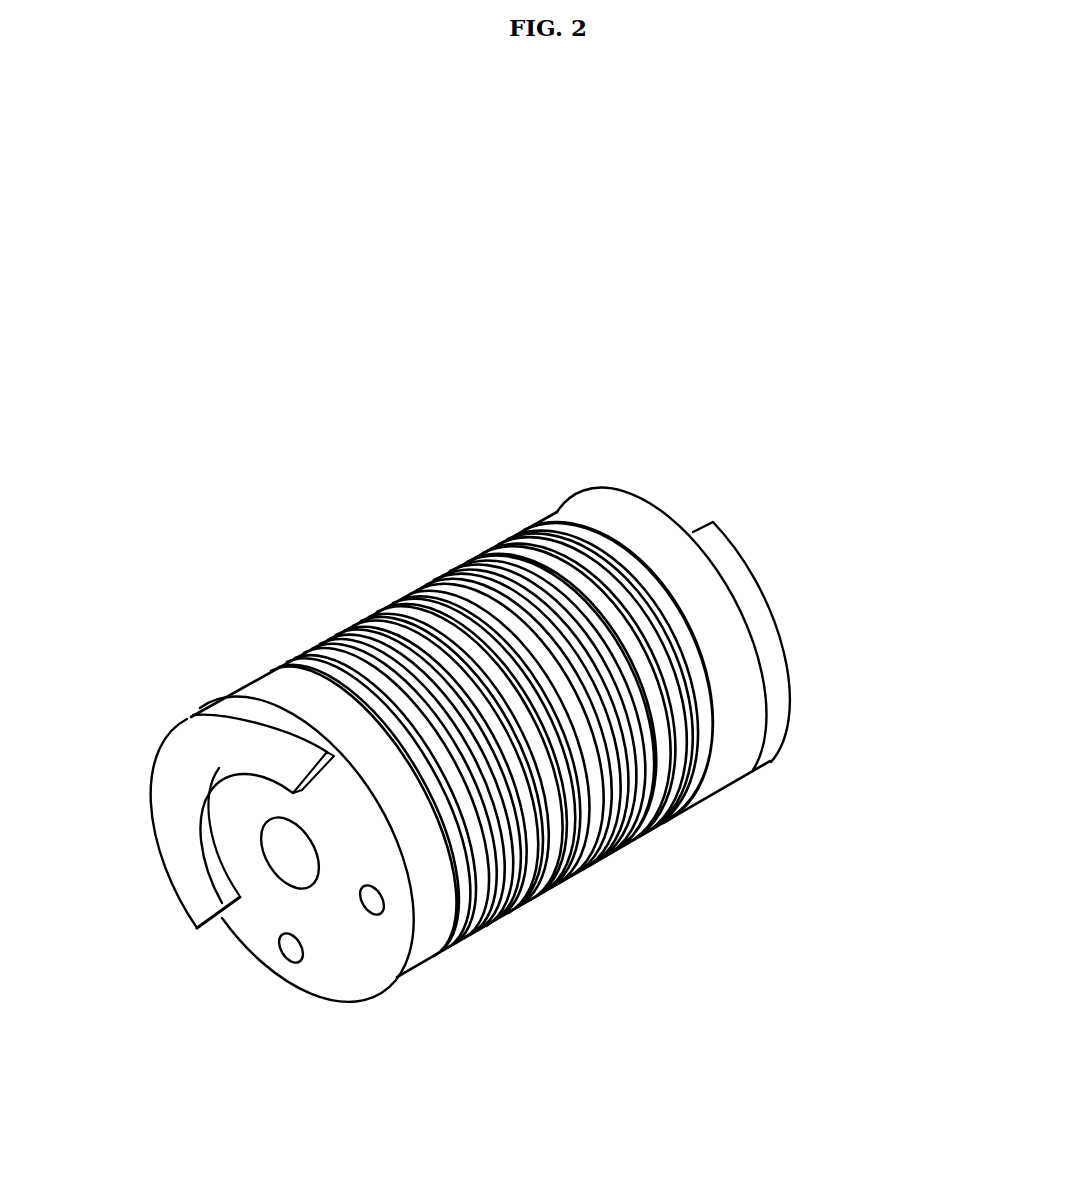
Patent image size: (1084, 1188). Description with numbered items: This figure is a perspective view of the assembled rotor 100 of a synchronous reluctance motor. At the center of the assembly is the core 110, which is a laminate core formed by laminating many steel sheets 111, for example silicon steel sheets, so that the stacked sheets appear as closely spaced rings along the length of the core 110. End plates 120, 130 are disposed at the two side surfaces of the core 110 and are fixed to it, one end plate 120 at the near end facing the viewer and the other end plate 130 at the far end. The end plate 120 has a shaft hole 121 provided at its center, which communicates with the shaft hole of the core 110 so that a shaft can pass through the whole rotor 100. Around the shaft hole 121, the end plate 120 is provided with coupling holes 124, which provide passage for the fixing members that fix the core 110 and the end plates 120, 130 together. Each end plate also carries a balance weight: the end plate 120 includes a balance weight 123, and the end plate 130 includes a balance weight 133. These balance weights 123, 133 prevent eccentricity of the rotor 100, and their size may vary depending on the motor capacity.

The rotor 100 is at (142, 281).
The core 110 is at (484, 534).
The steel sheet 111 is at (297, 662).
The end plate 120 is at (285, 688).
The shaft hole 121 is at (290, 857).
The balance weight 123 is at (215, 737).
The coupling hole 124 is at (291, 952).
The end plate 130 is at (578, 507).
The balance weight 133 is at (780, 697).